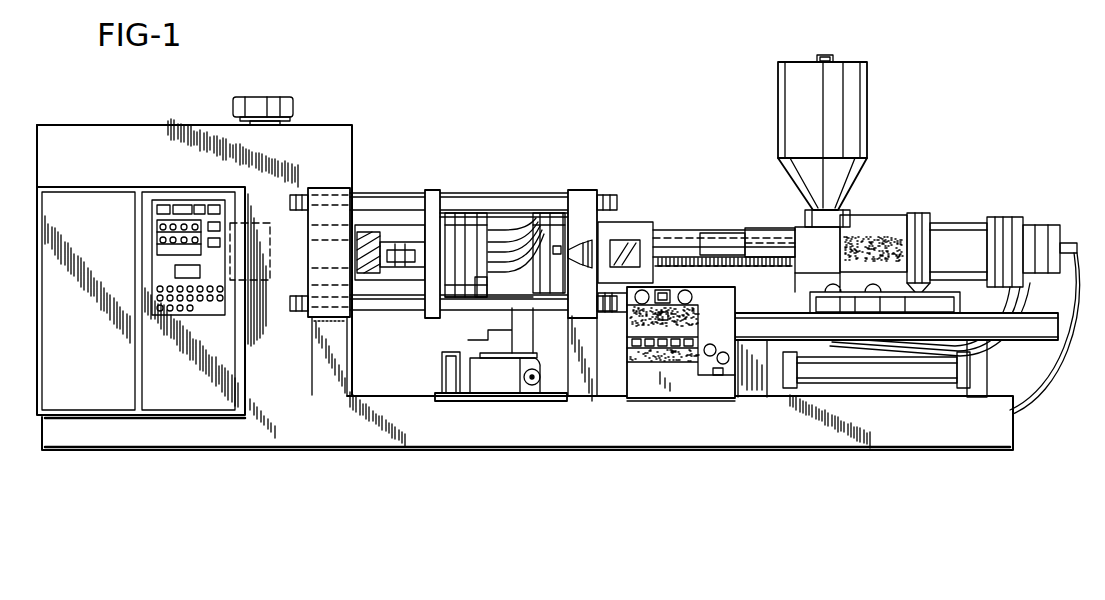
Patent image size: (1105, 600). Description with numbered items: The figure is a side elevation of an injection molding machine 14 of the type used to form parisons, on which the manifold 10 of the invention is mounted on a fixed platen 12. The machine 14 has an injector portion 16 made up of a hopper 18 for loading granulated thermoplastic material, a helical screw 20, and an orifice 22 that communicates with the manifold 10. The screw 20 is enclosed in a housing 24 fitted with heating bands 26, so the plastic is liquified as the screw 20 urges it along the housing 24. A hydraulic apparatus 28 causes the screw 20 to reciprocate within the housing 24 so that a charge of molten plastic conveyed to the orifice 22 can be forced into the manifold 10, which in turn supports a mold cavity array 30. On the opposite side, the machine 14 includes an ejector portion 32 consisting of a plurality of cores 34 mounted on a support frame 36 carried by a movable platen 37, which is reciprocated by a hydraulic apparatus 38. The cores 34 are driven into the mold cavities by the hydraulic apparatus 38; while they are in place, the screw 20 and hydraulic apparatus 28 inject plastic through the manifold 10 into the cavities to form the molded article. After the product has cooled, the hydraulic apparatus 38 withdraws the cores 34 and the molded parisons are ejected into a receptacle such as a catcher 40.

The manifold 10 is at (552, 206).
The fixed platen 12 is at (584, 202).
The injection molding machine 14 is at (526, 125).
The injector portion 16 is at (718, 226).
The hopper 18 is at (863, 125).
The helical screw 20 is at (730, 245).
The orifice 22 is at (575, 234).
The housing 24 is at (738, 272).
The heating bands 26 is at (690, 267).
The hydraulic apparatus 28 is at (885, 216).
The mold cavity array 30 is at (537, 213).
The ejector portion 32 is at (458, 190).
The cores 34 is at (542, 258).
The support frame 36 is at (468, 225).
The movable platen 37 is at (437, 188).
The hydraulic apparatus 38 is at (353, 160).
The catcher 40 is at (500, 323).